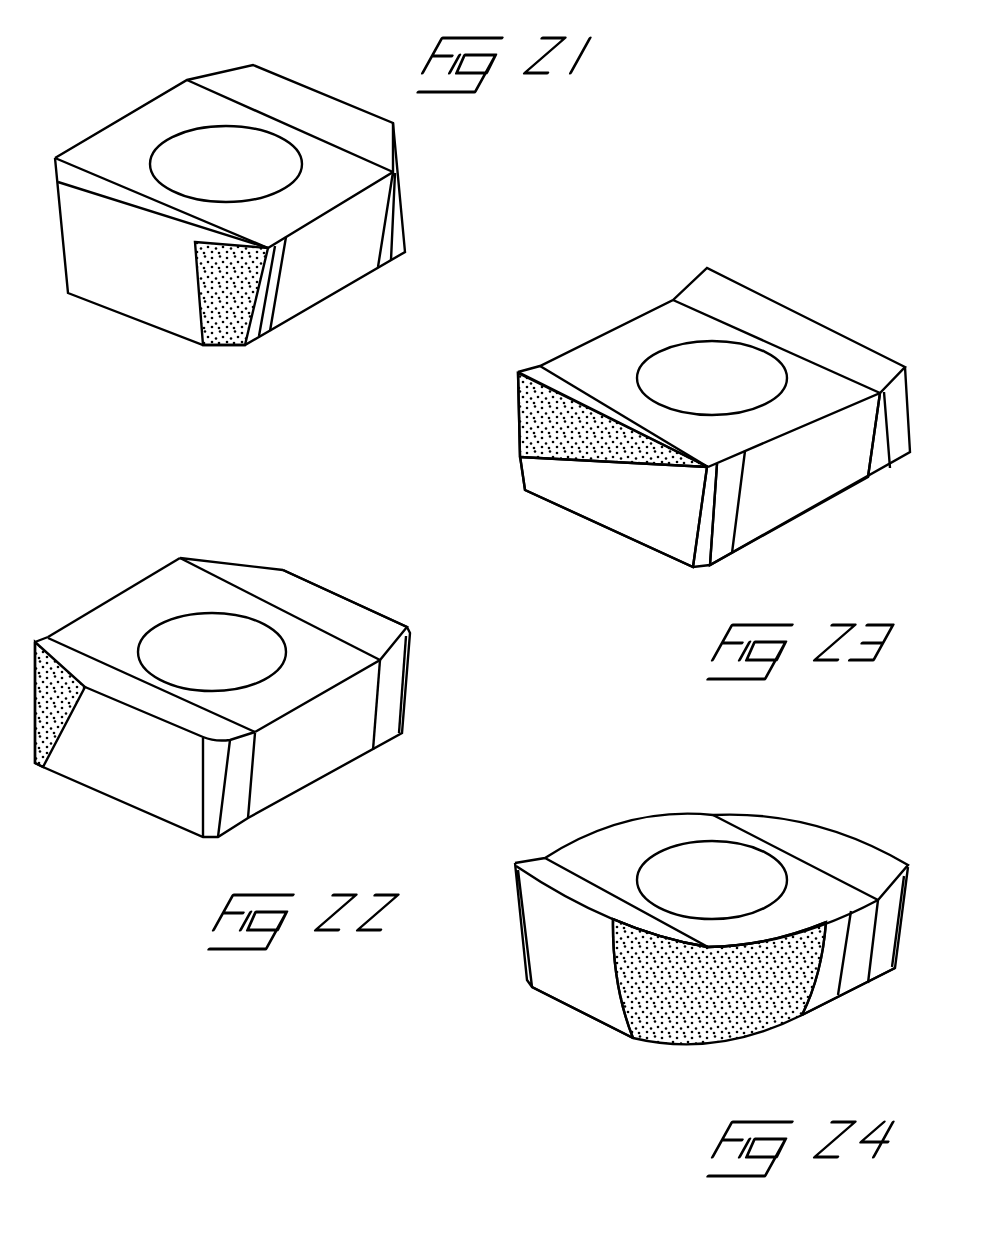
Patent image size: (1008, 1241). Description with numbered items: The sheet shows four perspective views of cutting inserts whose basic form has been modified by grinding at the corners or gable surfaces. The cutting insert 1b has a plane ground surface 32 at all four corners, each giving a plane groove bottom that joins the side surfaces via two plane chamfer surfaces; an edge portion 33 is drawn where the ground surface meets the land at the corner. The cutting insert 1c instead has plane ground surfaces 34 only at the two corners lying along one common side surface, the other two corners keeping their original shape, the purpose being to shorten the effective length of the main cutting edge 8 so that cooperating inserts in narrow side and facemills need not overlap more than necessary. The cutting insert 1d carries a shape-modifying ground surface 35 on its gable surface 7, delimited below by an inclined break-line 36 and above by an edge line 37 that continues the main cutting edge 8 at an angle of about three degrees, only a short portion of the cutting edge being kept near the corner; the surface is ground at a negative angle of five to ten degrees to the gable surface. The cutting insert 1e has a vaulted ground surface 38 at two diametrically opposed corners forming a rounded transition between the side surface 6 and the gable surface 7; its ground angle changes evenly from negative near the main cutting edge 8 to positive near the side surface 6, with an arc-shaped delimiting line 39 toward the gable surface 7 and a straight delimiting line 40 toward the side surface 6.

In FIG. 21, the cutting insert 1b is at (110, 105).
In FIG. 22, the cutting insert 1c is at (104, 560).
In FIG. 23, the cutting insert 1d is at (628, 290).
In FIG. 24, the cutting insert 1e is at (635, 783).
In FIG. 23, the first side surface 6 is at (810, 495).
In FIG. 24, the first side surface 6 is at (830, 972).
In FIG. 23, the gable surface 7 is at (628, 518).
In FIG. 24, the gable surface 7 is at (563, 988).
In FIG. 21, the main cutting edge 8 is at (127, 210).
In FIG. 22, the main cutting edge 8 is at (158, 715).
In FIG. 23, the main cutting edge 8 is at (714, 457).
In FIG. 24, the main cutting edge 8 is at (560, 890).
In FIG. 21, the ground surface 32 is at (220, 300).
In FIG. 21, the cutting edge portion 33 is at (226, 238).
In FIG. 22, the plane ground surface 34 is at (230, 563).
In FIG. 23, the ground surface 35 is at (530, 427).
In FIG. 23, the break-line 36 is at (596, 463).
In FIG. 23, the edge line 37 is at (571, 393).
In FIG. 24, the ground surface 38 is at (713, 1010).
In FIG. 24, the delimiting line 39 is at (627, 1007).
In FIG. 24, the delimiting line 40 is at (807, 987).